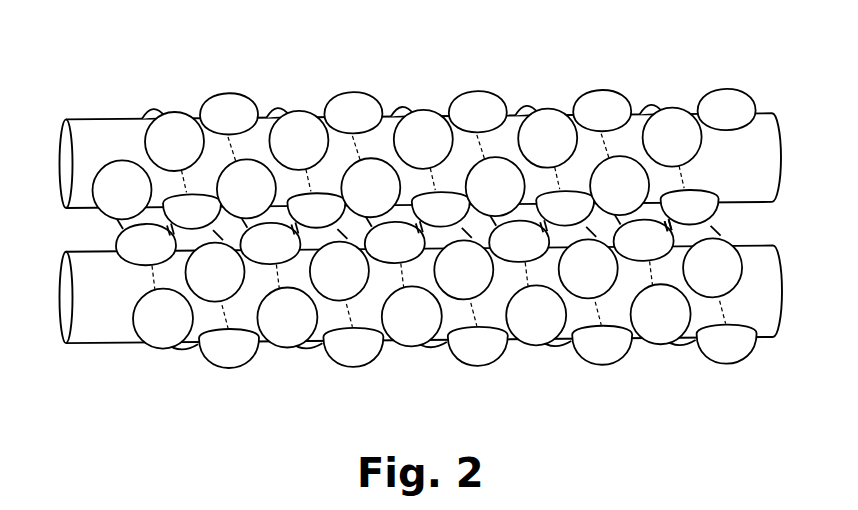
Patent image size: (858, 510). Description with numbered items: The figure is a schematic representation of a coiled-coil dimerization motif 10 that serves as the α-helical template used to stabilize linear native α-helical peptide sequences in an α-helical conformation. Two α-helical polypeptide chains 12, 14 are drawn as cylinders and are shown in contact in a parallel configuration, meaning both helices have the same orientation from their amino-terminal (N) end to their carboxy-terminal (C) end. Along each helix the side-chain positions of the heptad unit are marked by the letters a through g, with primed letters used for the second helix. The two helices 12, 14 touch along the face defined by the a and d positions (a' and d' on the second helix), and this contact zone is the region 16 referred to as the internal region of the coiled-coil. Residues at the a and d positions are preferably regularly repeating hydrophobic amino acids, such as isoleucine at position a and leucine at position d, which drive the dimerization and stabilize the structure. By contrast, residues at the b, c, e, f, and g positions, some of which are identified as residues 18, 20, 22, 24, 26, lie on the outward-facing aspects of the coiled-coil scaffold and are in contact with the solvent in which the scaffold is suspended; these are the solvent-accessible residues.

The coiled-coil dimer assembly 10 is at (694, 66).
The α-helical polypeptide chain 12 is at (764, 137).
The α-helical polypeptide chain 14 is at (765, 312).
The internal region of the coiled-coil 16 is at (757, 234).
The solvent-accessible residue 18 is at (107, 182).
The solvent-accessible residue 20 is at (156, 118).
The solvent-accessible residue 22 is at (180, 124).
The solvent-accessible residue 24 is at (234, 105).
The solvent-accessible residue 26 is at (220, 288).